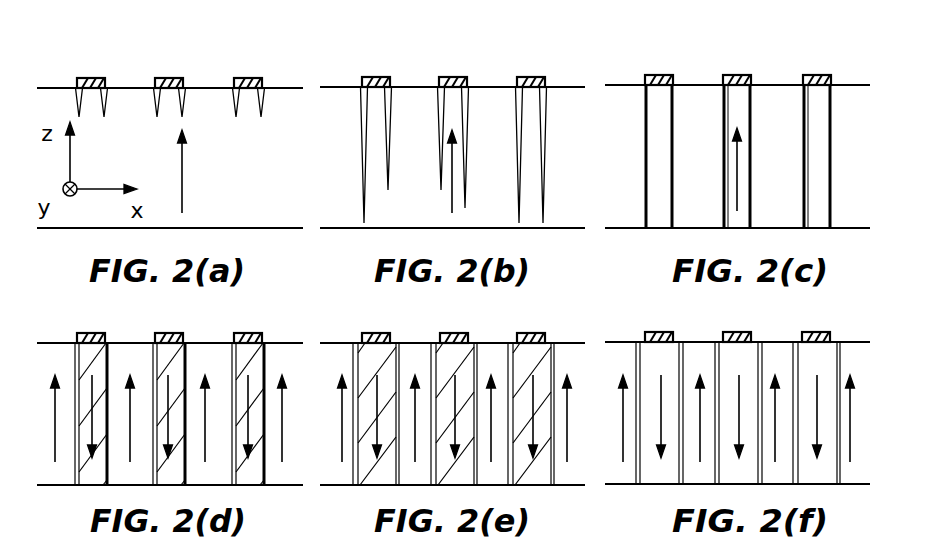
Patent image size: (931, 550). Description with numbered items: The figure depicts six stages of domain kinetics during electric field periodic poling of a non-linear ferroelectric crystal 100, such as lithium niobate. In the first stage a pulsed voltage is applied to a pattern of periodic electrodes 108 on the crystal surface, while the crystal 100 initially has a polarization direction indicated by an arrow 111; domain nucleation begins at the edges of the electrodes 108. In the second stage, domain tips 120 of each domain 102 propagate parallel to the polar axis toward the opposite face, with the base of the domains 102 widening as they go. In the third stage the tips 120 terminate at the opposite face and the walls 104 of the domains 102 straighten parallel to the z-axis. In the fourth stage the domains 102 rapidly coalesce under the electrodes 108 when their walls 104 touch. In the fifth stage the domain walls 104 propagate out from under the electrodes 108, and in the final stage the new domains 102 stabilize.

The crystal 100 is at (237, 159).
The electrodes 108 is at (99, 78).
The arrow 111 is at (182, 170).
The domains 102 is at (375, 128).
The domain tips 120 is at (530, 138).
The domain walls 104 is at (748, 100).